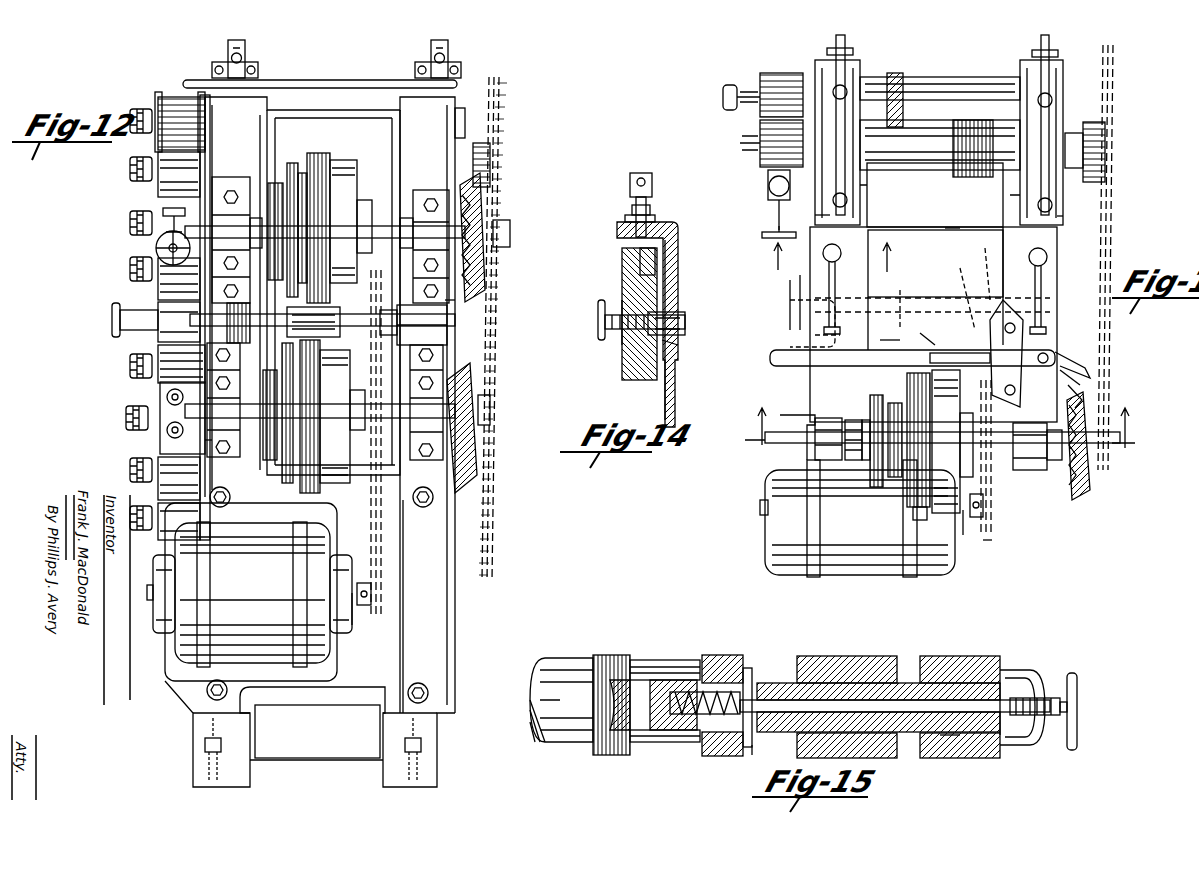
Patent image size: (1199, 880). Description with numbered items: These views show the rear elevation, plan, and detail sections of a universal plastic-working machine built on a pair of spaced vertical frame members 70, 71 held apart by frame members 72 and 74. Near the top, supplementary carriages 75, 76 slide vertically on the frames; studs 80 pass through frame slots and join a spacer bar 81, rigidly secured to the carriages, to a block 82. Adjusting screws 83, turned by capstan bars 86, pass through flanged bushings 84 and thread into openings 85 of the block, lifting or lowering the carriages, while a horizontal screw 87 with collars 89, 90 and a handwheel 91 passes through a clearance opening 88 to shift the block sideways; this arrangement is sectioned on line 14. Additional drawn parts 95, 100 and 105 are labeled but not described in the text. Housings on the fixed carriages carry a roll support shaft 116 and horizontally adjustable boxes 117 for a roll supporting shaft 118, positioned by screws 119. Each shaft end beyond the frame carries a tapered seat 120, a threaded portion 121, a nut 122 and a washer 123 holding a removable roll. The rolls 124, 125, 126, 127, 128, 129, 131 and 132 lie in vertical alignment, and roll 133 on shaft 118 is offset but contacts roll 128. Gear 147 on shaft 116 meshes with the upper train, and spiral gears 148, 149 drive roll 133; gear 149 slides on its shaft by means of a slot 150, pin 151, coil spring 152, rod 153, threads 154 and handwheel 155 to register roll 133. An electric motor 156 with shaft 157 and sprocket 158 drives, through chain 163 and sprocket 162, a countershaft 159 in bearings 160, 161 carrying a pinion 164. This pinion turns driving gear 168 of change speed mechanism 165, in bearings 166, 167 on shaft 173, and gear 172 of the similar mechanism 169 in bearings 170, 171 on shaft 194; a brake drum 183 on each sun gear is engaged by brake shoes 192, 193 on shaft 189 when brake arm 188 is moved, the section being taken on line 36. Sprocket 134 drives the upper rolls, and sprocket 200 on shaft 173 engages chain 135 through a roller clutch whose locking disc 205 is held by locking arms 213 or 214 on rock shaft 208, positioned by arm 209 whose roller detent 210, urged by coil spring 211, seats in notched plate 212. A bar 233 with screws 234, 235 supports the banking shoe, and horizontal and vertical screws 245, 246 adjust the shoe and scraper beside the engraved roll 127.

In FIG. 13, the section line 14 is at (825, 261).
In FIG. 13, the section line 36 is at (943, 430).
In FIG. 12, the frame member 70 is at (441, 113).
In FIG. 13, the frame member 70 is at (1058, 333).
In FIG. 14, the frame member 71 is at (680, 225).
In FIG. 13, the frame member 71 is at (810, 385).
In FIG. 12, the frame member 72 is at (265, 760).
In FIG. 13, the frame member 72 is at (940, 205).
In FIG. 12, the frame member 74 is at (322, 108).
In FIG. 13, the frame member 74 is at (905, 308).
In FIG. 13, the supplementary frame member or carriage 75 is at (1058, 216).
In FIG. 13, the supplementary frame member or carriage 76 is at (818, 215).
In FIG. 14, the stud 80 is at (622, 275).
In FIG. 13, the spacer bar 81 is at (955, 228).
In FIG. 14, the block 82 is at (622, 352).
In FIG. 14, the adjusting screw 83 is at (655, 205).
In FIG. 14, the bushing 84 is at (628, 216).
In FIG. 14, the threaded opening 85 is at (658, 255).
In FIG. 12, the capstan bar 86 is at (225, 62).
In FIG. 14, the capstan bar 86 is at (641, 173).
In FIG. 13, the capstan bar 86 is at (826, 318).
In FIG. 14, the adjusting screw 87 is at (604, 312).
In FIG. 14, the clearance opening 88 is at (680, 345).
In FIG. 14, the collar 89 is at (680, 280).
In FIG. 14, the collar 90 is at (686, 322).
In FIG. 14, the handwheel 91 is at (598, 320).
In FIG. 13, the handwheel 91 is at (795, 278).
In FIG. 12, the shaft 95 is at (467, 122).
In FIG. 13, the shaft 95 is at (922, 145).
In FIG. 13, the rod 100 is at (847, 40).
In FIG. 12, the bearing bracket 105 is at (248, 52).
In FIG. 13, the bearing bracket 105 is at (866, 186).
In FIG. 15, the roll support shaft 116 is at (565, 660).
In FIG. 15, the box 117 is at (862, 660).
In FIG. 13, the roll supporting shaft 118 is at (915, 88).
In FIG. 15, the roll supporting shaft 118 is at (700, 720).
In FIG. 13, the adjusting screw 119 is at (826, 52).
In FIG. 15, the tapered seat 120 is at (950, 660).
In FIG. 15, the threaded portion 121 is at (1024, 695).
In FIG. 15, the nut 122 is at (1020, 682).
In FIG. 15, the washer 123 is at (1012, 672).
In FIG. 12, the feeding roll 124 is at (165, 100).
In FIG. 13, the feeding roll 124 is at (770, 135).
In FIG. 12, the feeding roll 125 is at (165, 170).
In FIG. 12, the flanged roll 126 is at (160, 210).
In FIG. 12, the engraved roll 127 is at (160, 268).
In FIG. 12, the roll 128 is at (160, 303).
In FIG. 12, the roll 129 is at (160, 355).
In FIG. 12, the roll 131 is at (162, 462).
In FIG. 12, the roll 132 is at (162, 513).
In FIG. 13, the roll 133 is at (782, 88).
In FIG. 12, the sprocket 134 is at (490, 150).
In FIG. 13, the sprocket 134 is at (1104, 122).
In FIG. 12, the chain 135 is at (500, 82).
In FIG. 13, the chain 135 is at (1112, 248).
In FIG. 15, the gear 147 is at (626, 655).
In FIG. 15, the spiral gear 148 is at (752, 668).
In FIG. 15, the spiral gear 149 is at (743, 665).
In FIG. 15, the slot 150 is at (752, 745).
In FIG. 15, the pin 151 is at (768, 690).
In FIG. 15, the coil spring 152 is at (690, 683).
In FIG. 15, the rod 153 is at (950, 737).
In FIG. 15, the threads 154 is at (1050, 720).
In FIG. 15, the handwheel 155 is at (1080, 722).
In FIG. 12, the electric motor 156 is at (345, 640).
In FIG. 13, the electric motor 156 is at (780, 520).
In FIG. 12, the motor shaft 157 is at (358, 622).
In FIG. 13, the motor shaft 157 is at (966, 530).
In FIG. 12, the sprocket 158 is at (372, 592).
In FIG. 13, the sprocket 158 is at (984, 516).
In FIG. 12, the countershaft 159 is at (430, 315).
In FIG. 12, the bearing 160 is at (227, 320).
In FIG. 12, the bearing 161 is at (440, 330).
In FIG. 12, the sprocket 162 is at (447, 305).
In FIG. 13, the sprocket 162 is at (992, 462).
In FIG. 12, the chain 163 is at (381, 540).
In FIG. 13, the chain 163 is at (985, 537).
In FIG. 12, the pinion 164 is at (345, 270).
In FIG. 12, the change speed mechanism 165 is at (330, 176).
In FIG. 13, the change speed mechanism 165 is at (905, 400).
In FIG. 12, the bearing 166 is at (232, 190).
In FIG. 13, the bearing 166 is at (822, 440).
In FIG. 12, the bearing 167 is at (420, 195).
In FIG. 13, the bearing 167 is at (1030, 470).
In FIG. 12, the driving gear 168 is at (318, 142).
In FIG. 13, the driving gear 168 is at (912, 512).
In FIG. 12, the change speed mechanism 169 is at (335, 490).
In FIG. 12, the bearing 170 is at (205, 440).
In FIG. 12, the bearing 171 is at (472, 396).
In FIG. 12, the gear 172 is at (305, 490).
In FIG. 12, the shaft 173 is at (506, 232).
In FIG. 13, the brake drum 183 is at (848, 455).
In FIG. 13, the brake arm 188 is at (815, 335).
In FIG. 13, the shaft 189 is at (891, 331).
In FIG. 12, the brake shoe 192 is at (276, 183).
In FIG. 12, the brake shoe 193 is at (272, 460).
In FIG. 12, the shaft 194 is at (496, 420).
In FIG. 13, the sprocket 200 is at (1083, 472).
In FIG. 12, the locking disc 205 is at (490, 192).
In FIG. 13, the locking disc 205 is at (1080, 495).
In FIG. 13, the rock shaft 208 is at (1065, 355).
In FIG. 13, the arm 209 is at (810, 358).
In FIG. 13, the roller detent 210 is at (959, 290).
In FIG. 13, the coil spring 211 is at (935, 332).
In FIG. 13, the notched plate 212 is at (969, 267).
In FIG. 13, the locking arm 213 is at (1085, 372).
In FIG. 13, the locking arm 214 is at (1085, 393).
In FIG. 12, the bar 233 is at (162, 385).
In FIG. 12, the adjusting screw 234 is at (165, 400).
In FIG. 12, the adjusting screw 235 is at (162, 427).
In FIG. 12, the horizontal screw 245 is at (160, 252).
In FIG. 13, the horizontal screw 245 is at (770, 240).
In FIG. 13, the vertical screw 246 is at (770, 182).